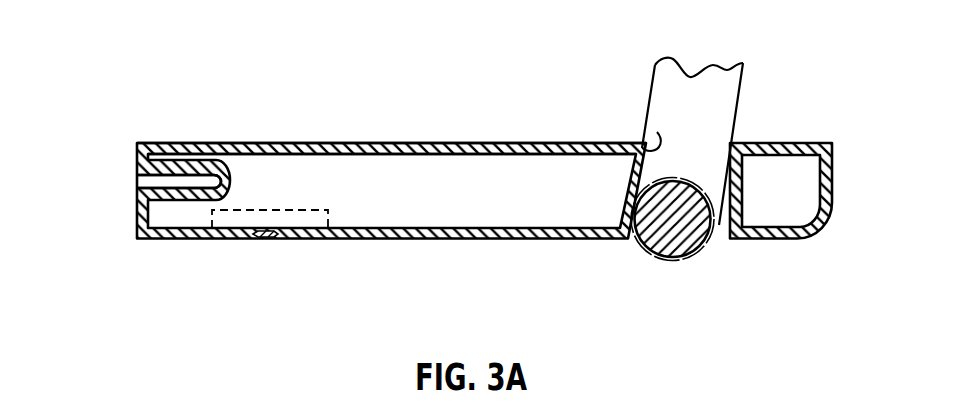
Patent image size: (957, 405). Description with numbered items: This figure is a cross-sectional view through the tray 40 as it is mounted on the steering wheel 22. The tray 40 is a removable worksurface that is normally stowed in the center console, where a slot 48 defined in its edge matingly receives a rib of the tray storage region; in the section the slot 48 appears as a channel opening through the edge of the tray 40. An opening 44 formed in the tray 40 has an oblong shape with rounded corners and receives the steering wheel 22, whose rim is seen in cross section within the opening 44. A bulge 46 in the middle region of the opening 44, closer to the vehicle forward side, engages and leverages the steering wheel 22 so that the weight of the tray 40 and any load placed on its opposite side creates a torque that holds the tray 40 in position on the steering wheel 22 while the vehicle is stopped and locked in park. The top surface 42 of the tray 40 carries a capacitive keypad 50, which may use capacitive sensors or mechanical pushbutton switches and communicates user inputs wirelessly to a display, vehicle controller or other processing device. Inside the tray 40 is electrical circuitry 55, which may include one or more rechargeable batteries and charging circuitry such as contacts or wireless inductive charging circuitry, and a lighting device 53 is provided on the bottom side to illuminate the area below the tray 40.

The steering wheel 22 is at (663, 102).
The tray 40 is at (192, 143).
The top surface 42 is at (217, 143).
The opening 44 is at (719, 227).
The bulge 46 is at (657, 132).
The slot 48 is at (148, 181).
The capacitive keypad 50 is at (360, 143).
The lighting device 53 is at (270, 239).
The electrical circuitry 55 is at (280, 210).